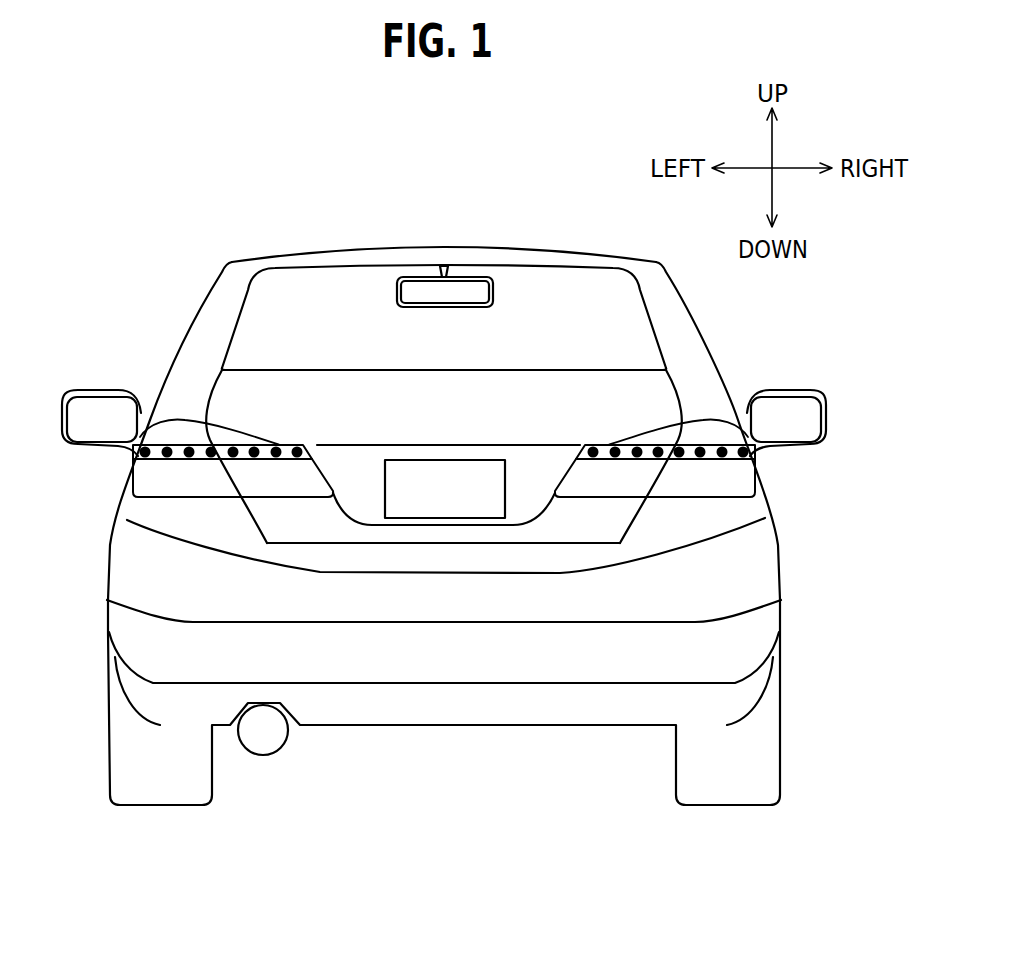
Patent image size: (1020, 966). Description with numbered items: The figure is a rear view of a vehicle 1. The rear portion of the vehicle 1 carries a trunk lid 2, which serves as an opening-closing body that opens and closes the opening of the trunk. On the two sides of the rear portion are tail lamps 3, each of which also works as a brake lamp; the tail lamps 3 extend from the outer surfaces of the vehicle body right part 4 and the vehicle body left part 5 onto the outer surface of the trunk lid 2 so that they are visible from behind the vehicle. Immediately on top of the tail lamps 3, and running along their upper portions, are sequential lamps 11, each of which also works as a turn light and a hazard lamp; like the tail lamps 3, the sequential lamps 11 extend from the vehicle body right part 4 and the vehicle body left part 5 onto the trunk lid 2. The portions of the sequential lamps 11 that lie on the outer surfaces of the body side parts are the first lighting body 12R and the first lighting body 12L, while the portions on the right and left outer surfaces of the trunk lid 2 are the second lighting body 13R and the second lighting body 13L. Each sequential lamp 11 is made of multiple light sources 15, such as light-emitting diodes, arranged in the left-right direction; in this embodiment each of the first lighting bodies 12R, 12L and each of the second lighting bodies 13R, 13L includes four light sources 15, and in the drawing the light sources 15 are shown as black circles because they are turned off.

The vehicle 1 is at (748, 321).
The trunk lid 2 is at (218, 388).
The tail lamp 3 is at (449, 530).
The vehicle body right part 4 is at (765, 520).
The vehicle body left part 5 is at (125, 521).
The sequential lamp 11 is at (258, 445).
The first lighting body 12L is at (135, 461).
The first lighting body 12R is at (732, 461).
The second lighting body 13L is at (280, 461).
The second lighting body 13R is at (592, 461).
The light source 15 is at (188, 461).